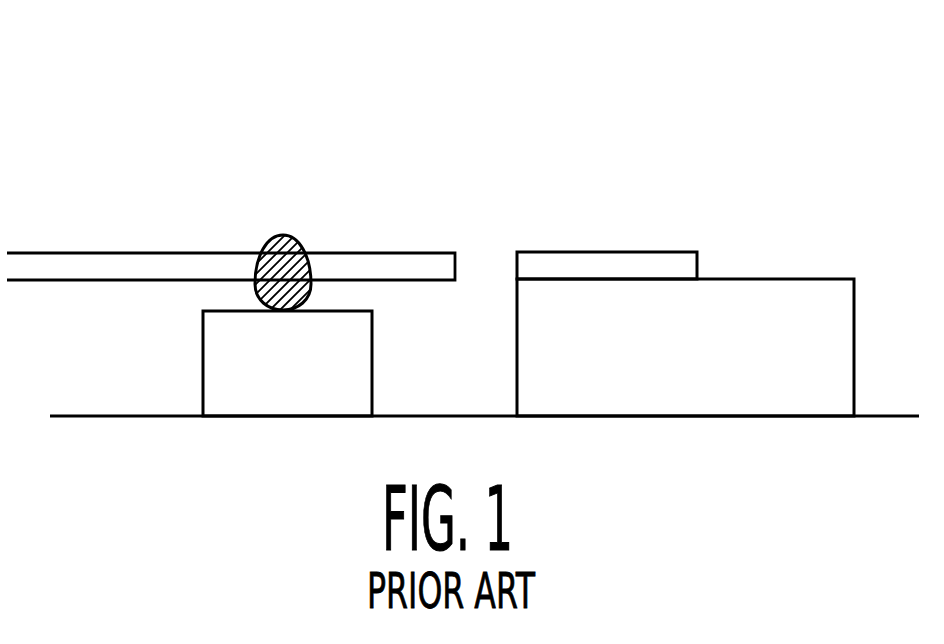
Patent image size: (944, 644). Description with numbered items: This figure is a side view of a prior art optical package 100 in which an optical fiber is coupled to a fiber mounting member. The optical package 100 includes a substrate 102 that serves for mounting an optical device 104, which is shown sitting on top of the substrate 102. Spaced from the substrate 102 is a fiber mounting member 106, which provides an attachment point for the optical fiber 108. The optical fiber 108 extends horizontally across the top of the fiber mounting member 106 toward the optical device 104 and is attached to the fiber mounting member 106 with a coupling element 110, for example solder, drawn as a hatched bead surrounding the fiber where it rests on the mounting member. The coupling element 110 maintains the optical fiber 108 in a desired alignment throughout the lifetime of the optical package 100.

The optical package 100 is at (190, 61).
The substrate 102 is at (798, 290).
The optical device 104 is at (587, 252).
The fiber mounting member 106 is at (203, 371).
The optical fiber 108 is at (116, 252).
The coupling element 110 is at (282, 233).